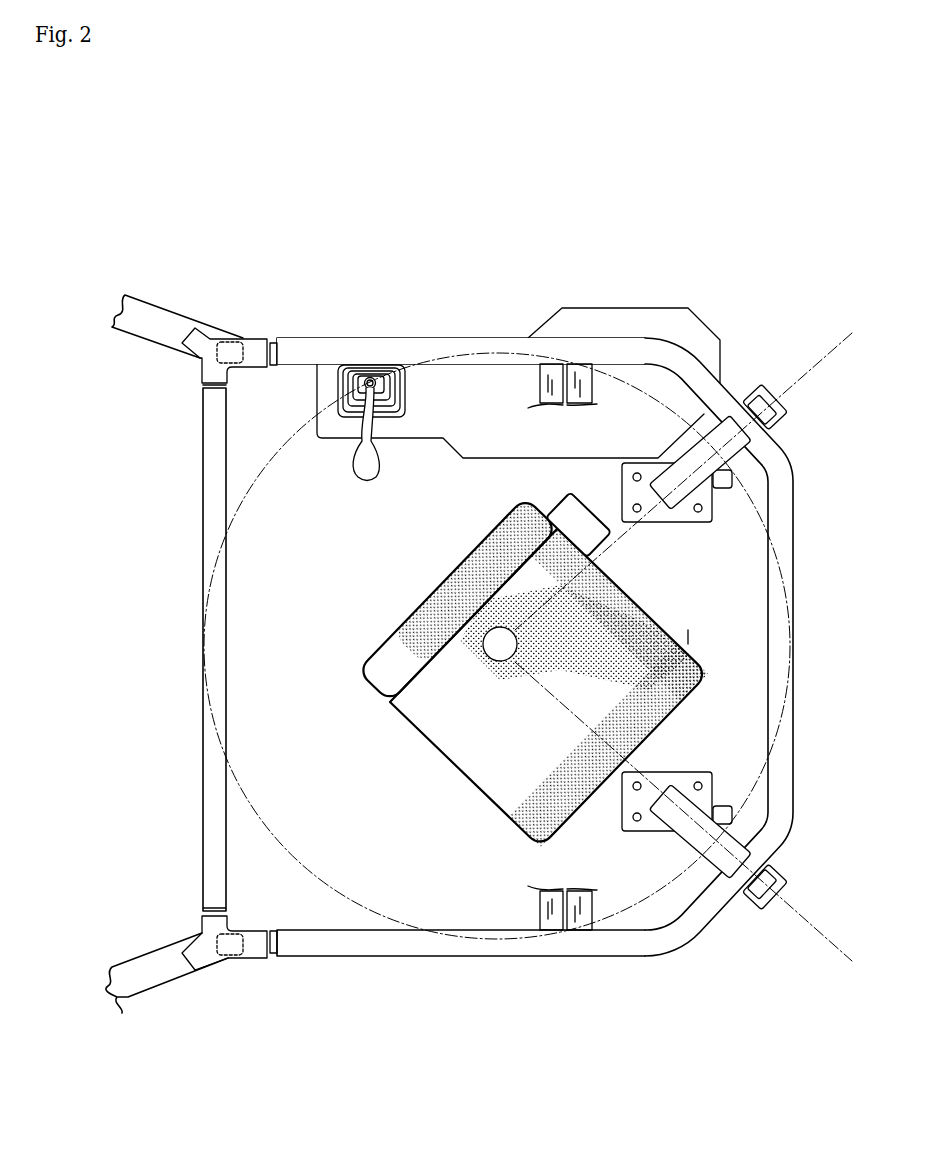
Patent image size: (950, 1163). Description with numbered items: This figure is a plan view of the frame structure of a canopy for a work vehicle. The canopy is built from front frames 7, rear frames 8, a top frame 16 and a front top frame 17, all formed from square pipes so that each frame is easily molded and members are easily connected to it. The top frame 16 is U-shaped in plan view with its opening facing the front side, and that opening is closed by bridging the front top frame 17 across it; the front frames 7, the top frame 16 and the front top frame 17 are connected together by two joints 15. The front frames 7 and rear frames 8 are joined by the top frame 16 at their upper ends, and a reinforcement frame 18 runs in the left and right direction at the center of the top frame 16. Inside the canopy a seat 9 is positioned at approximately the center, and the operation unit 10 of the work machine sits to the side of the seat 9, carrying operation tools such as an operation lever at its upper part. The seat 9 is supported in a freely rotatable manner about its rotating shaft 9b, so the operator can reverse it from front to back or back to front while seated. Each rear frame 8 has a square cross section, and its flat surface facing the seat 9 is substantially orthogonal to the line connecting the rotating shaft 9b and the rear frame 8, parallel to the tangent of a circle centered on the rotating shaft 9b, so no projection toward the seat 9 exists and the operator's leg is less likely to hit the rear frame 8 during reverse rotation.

The front frame 7 is at (151, 313).
The rear frame 8 is at (718, 482).
The seat 9 is at (507, 760).
The rotating shaft of the seat 9b is at (490, 660).
The operation unit 10 is at (447, 390).
The joint 15 is at (253, 350).
The top frame 16 is at (431, 957).
The front top frame 17 is at (211, 489).
The reinforcement frame 18 is at (553, 898).